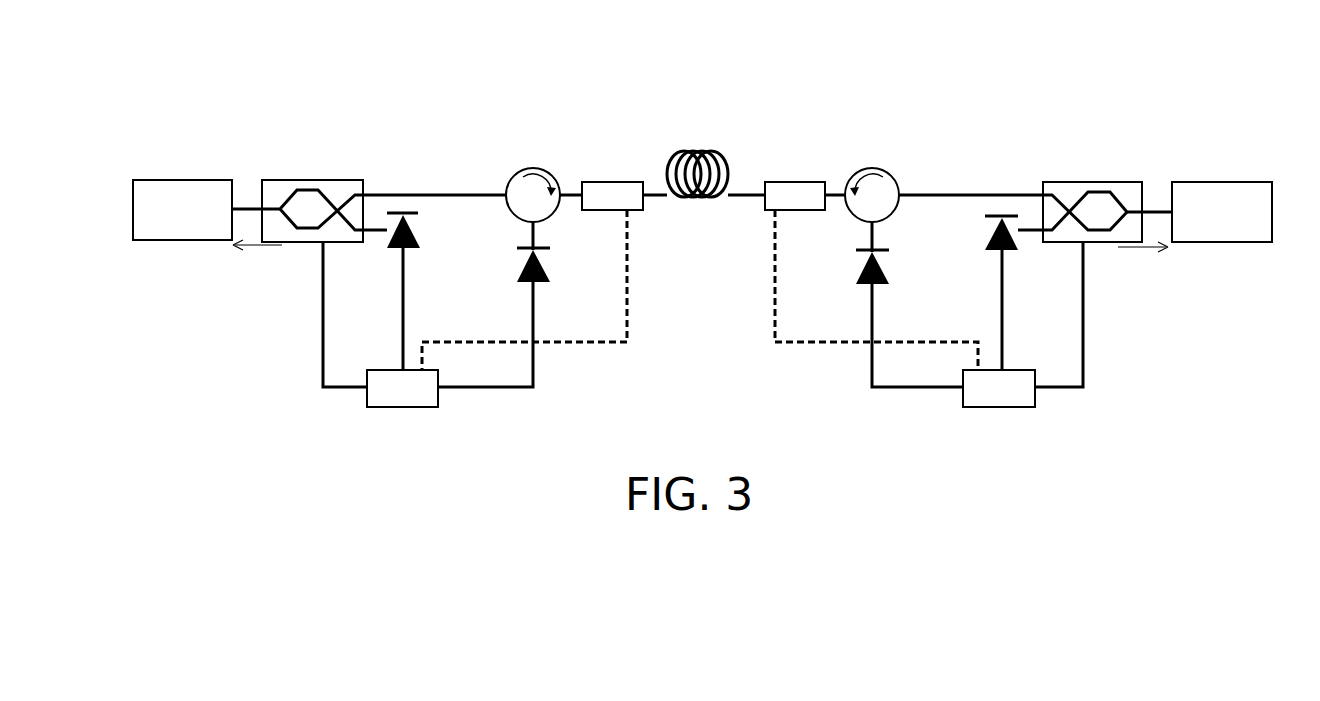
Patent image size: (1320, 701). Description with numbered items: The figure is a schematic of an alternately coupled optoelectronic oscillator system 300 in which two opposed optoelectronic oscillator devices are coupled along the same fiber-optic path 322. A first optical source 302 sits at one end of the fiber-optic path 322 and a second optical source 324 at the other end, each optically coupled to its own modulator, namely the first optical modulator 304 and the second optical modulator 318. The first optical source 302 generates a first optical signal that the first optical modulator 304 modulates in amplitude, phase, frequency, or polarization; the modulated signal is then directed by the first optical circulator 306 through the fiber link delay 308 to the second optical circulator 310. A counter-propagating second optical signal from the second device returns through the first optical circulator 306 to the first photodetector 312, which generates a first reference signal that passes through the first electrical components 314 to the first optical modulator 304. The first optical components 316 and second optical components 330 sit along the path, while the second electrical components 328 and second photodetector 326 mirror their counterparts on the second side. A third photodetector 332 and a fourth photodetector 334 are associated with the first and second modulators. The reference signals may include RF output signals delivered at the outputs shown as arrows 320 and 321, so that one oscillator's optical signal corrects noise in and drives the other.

The optoelectronic oscillator system 300 is at (733, 86).
The first optical source 302 is at (172, 180).
The first optical modulator 304 is at (340, 180).
The first optical circulator 306 is at (552, 173).
The fiber link delay 308 is at (727, 165).
The second optical circulator 310 is at (891, 175).
The first photodetector 312 is at (550, 272).
The first electrical components 314 is at (438, 368).
The first optical components 316 is at (598, 182).
The second optical modulator 318 is at (1125, 182).
The output of first optoelectronic oscillator device 320 is at (273, 247).
The output of second optoelectronic oscillator device 321 is at (1122, 250).
The fiber-optic path 322 is at (420, 195).
The second optical source 324 is at (1205, 182).
The second photodetector 326 is at (862, 285).
The second electrical components 328 is at (963, 368).
The second optical components 330 is at (795, 210).
The third photodetector 332 is at (418, 238).
The fourth photodetector 334 is at (988, 228).